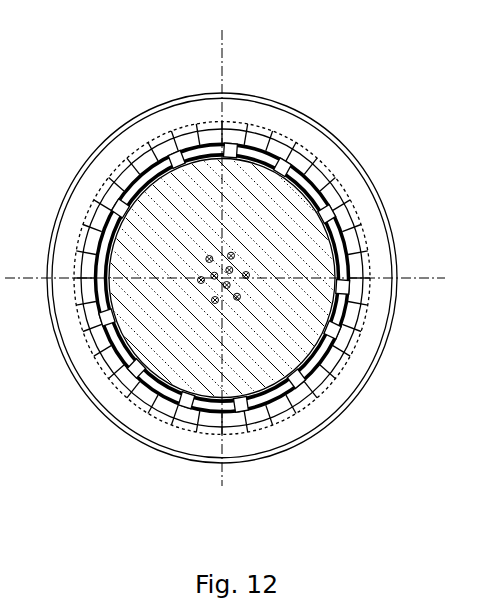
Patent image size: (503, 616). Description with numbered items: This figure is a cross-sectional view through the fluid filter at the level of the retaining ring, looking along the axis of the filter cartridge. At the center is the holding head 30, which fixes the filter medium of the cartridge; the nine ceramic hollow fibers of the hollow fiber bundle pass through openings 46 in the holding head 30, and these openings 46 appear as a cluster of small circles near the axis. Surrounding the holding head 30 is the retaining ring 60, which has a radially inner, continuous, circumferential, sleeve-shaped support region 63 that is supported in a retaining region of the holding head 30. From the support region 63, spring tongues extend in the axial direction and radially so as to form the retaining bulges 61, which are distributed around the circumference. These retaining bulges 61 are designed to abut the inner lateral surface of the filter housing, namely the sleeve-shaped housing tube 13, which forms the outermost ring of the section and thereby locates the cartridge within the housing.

The housing tube 13 is at (272, 148).
The openings 46 is at (231, 256).
The holding head 30 is at (297, 208).
The retaining ring 60 is at (334, 209).
The support region 63 is at (347, 247).
The retaining bulges 61 is at (345, 273).